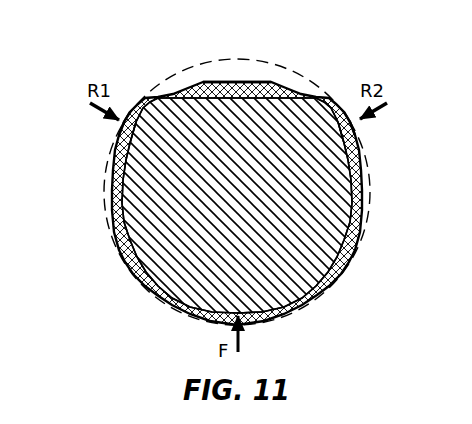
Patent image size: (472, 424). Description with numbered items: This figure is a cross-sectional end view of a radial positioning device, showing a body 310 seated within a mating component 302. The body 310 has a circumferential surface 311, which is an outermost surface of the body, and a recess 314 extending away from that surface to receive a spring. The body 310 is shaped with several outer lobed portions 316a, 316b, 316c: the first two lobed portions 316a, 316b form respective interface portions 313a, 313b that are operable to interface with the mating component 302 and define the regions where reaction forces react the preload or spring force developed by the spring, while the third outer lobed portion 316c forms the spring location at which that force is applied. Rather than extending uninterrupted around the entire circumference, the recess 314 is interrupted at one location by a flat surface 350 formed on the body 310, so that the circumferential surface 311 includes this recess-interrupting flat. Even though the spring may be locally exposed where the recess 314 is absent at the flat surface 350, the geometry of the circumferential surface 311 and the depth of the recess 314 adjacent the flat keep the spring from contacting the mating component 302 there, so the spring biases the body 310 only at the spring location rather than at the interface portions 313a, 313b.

The mating component 302 is at (247, 58).
The body 310 is at (195, 43).
The circumferential surface 311 is at (368, 189).
The interface portion 313a is at (118, 131).
The interface portion 313b is at (356, 130).
The recess 314 is at (336, 110).
The outer lobed portion 316a is at (124, 141).
The outer lobed portion 316b is at (352, 138).
The outer lobed portion 316c is at (257, 332).
The flat surface 350 is at (326, 97).